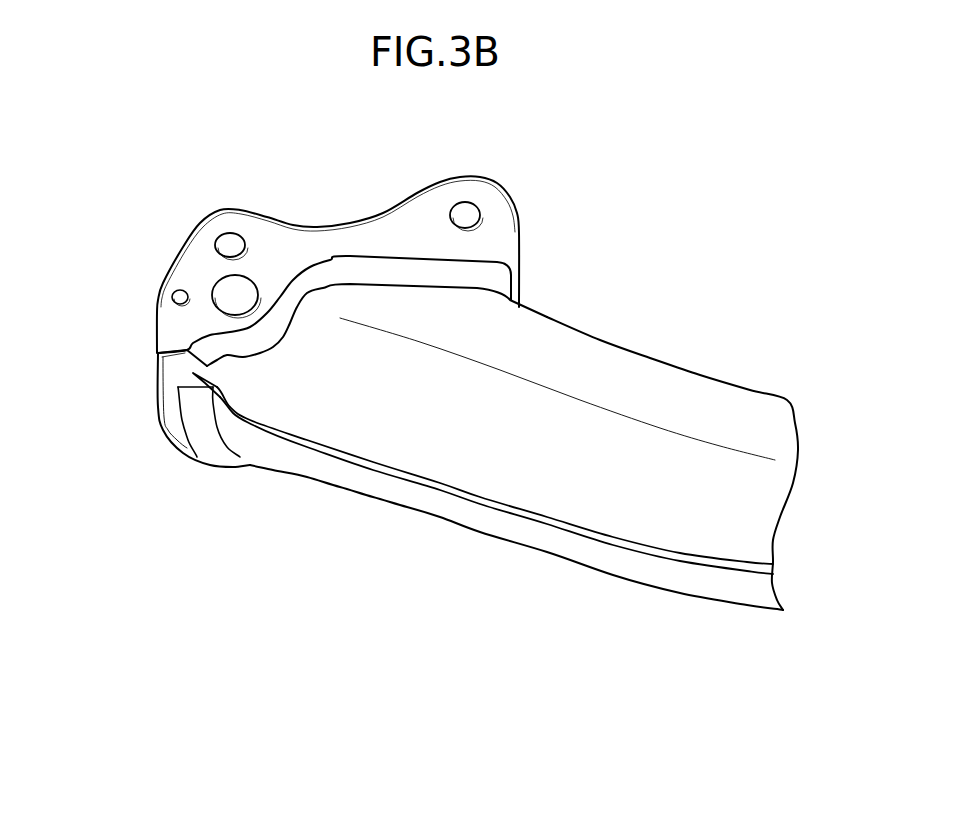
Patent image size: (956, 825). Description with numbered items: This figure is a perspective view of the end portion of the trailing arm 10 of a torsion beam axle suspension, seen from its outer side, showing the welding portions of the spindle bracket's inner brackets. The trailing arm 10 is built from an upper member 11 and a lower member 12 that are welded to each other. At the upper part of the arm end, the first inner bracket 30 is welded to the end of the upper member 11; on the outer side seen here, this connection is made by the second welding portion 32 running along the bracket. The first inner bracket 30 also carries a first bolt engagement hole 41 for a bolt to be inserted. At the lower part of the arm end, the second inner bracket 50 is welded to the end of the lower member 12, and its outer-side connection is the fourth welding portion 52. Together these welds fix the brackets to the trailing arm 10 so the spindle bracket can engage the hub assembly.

The trailing arm 10 is at (507, 486).
The upper member 11 is at (593, 367).
The lower member 12 is at (595, 552).
The first inner bracket 30 is at (430, 207).
The second welding portion 32 is at (345, 267).
The first bolt engagement hole 41 is at (225, 237).
The second inner bracket 50 is at (173, 370).
The fourth welding portion 52 is at (208, 445).